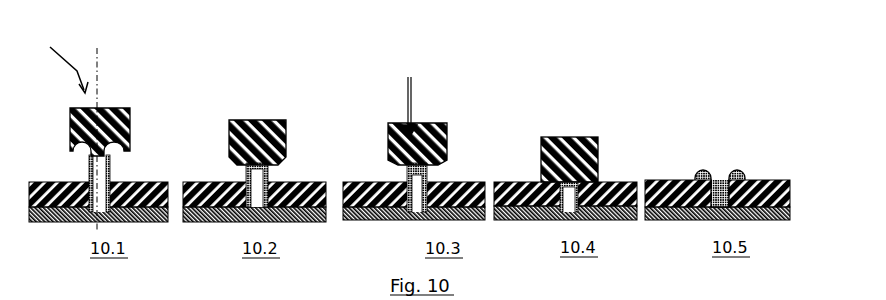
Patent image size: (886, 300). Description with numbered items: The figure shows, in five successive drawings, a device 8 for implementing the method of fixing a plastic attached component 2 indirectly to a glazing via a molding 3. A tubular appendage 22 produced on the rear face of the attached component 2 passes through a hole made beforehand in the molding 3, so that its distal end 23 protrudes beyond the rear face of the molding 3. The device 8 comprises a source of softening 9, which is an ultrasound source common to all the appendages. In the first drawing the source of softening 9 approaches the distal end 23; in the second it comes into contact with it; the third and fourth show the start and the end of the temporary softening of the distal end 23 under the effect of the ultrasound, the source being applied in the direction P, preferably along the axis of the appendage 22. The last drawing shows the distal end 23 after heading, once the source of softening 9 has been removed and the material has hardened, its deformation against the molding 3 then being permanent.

The attached component 2 is at (60, 213).
The molding 3 is at (152, 182).
The device 8 is at (69, 57).
The source of softening 9 is at (130, 107).
The appendage 22 is at (72, 181).
The distal end 23 is at (113, 163).
The direction P is at (407, 113).